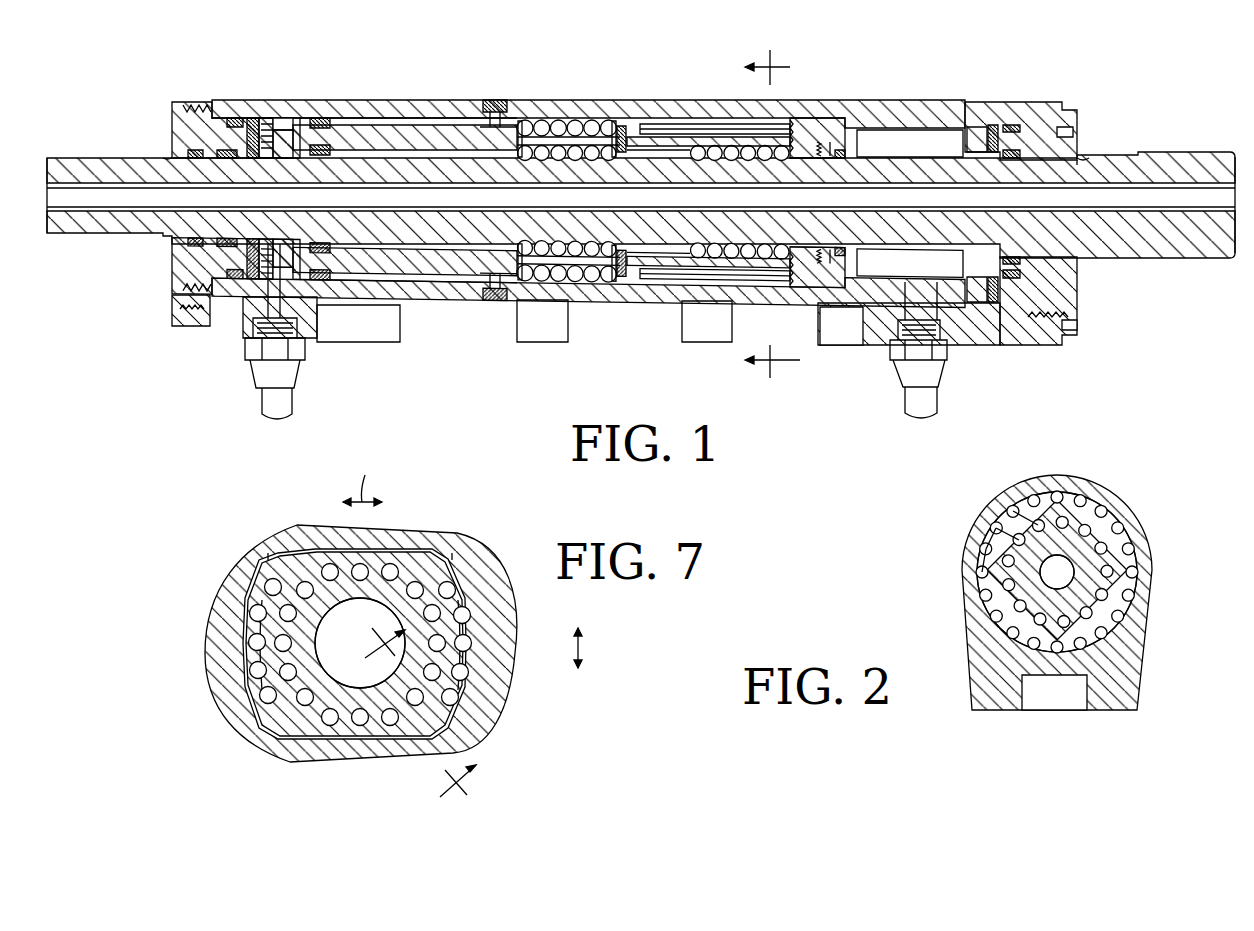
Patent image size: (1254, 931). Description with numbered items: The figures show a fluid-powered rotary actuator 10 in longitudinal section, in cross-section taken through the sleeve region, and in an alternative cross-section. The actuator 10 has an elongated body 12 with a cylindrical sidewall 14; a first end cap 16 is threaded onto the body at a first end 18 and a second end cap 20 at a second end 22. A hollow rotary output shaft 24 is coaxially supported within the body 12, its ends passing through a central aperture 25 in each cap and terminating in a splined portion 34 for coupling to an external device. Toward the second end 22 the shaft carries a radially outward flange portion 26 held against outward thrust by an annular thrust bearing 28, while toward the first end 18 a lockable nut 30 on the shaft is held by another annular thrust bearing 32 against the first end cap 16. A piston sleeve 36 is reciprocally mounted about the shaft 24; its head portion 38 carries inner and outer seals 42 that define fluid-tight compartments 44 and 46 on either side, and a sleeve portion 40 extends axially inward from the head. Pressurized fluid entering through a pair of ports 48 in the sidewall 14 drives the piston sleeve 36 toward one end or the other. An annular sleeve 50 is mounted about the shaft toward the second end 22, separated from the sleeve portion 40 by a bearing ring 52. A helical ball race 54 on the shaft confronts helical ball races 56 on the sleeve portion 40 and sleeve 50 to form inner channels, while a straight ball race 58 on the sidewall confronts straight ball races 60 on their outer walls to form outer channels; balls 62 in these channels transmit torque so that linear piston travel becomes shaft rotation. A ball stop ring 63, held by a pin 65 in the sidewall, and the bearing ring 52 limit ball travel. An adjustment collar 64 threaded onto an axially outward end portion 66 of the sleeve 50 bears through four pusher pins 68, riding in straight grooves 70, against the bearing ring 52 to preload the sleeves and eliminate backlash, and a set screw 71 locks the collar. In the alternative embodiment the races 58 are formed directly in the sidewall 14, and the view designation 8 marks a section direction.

In FIG. 1, the fluid-powered rotary actuator 10 is at (641, 222).
In FIG. 7, the fluid-powered rotary actuator 10 is at (365, 624).
In FIG. 2, the fluid-powered rotary actuator 10 is at (1031, 590).
In FIG. 1, the housing or body 12 is at (877, 103).
In FIG. 7, the housing or body 12 is at (318, 526).
In FIG. 2, the housing or body 12 is at (1150, 596).
In FIG. 1, the cylindrical sidewall 14 is at (820, 120).
In FIG. 7, the cylindrical sidewall 14 is at (354, 610).
In FIG. 2, the cylindrical sidewall 14 is at (1100, 495).
In FIG. 1, the first end cap 16 is at (178, 128).
In FIG. 1, the first end 18 is at (188, 104).
In FIG. 1, the second end cap 20 is at (1080, 160).
In FIG. 1, the second end 22 is at (1045, 104).
In FIG. 1, the rotary output shaft 24 is at (641, 205).
In FIG. 7, the rotary output shaft 24 is at (360, 643).
In FIG. 2, the rotary output shaft 24 is at (1078, 560).
In FIG. 1, the central aperture 25 is at (165, 158).
In FIG. 1, the flange portion 26 is at (975, 128).
In FIG. 1, the annular thrust bearing 28 is at (993, 128).
In FIG. 1, the lockable nut 30 is at (266, 120).
In FIG. 1, the annular thrust bearing 32 is at (250, 120).
In FIG. 1, the splined portion 34 is at (78, 157).
In FIG. 1, the piston sleeve 36 is at (360, 136).
In FIG. 1, the head portion 38 is at (286, 136).
In FIG. 1, the sleeve portion 40 is at (462, 300).
In FIG. 1, the inner and outer seals 42 is at (318, 118).
In FIG. 1, the fluid-tight compartment 44 is at (283, 120).
In FIG. 1, the fluid-tight compartment 46 is at (908, 136).
In FIG. 1, the ports 48 is at (262, 306).
In FIG. 1, the annular sleeve 50 is at (660, 138).
In FIG. 7, the annular sleeve 50 is at (373, 522).
In FIG. 2, the annular sleeve 50 is at (1085, 540).
In FIG. 1, the bearing ring 52 is at (621, 126).
In FIG. 1, the helical ball race 54 is at (690, 150).
In FIG. 2, the helical ball race 54 is at (1010, 520).
In FIG. 1, the helical ball races 56 is at (517, 140).
In FIG. 2, the helical ball races 56 is at (1030, 510).
In FIG. 1, the straight ball race 58 is at (612, 130).
In FIG. 7, the straight ball race 58 is at (262, 588).
In FIG. 2, the straight ball race 58 is at (992, 535).
In FIG. 1, the straight ball races 60 is at (402, 126).
In FIG. 2, the straight ball races 60 is at (988, 555).
In FIG. 1, the balls 62 is at (576, 128).
In FIG. 7, the balls 62 is at (455, 615).
In FIG. 2, the balls 62 is at (1078, 502).
In FIG. 1, the ball stop ring 63 is at (490, 126).
In FIG. 1, the adjustment collar 64 is at (810, 122).
In FIG. 1, the pin 65 is at (495, 106).
In FIG. 1, the axially outward end portion 66 is at (795, 126).
In FIG. 1, the pusher pins 68 is at (720, 126).
In FIG. 2, the pusher pins 68 is at (1042, 500).
In FIG. 1, the straight grooves 70 is at (740, 130).
In FIG. 2, the straight grooves 70 is at (1058, 500).
In FIG. 1, the set screw 71 is at (812, 160).
In FIG. 7, the view direction 8 is at (427, 707).